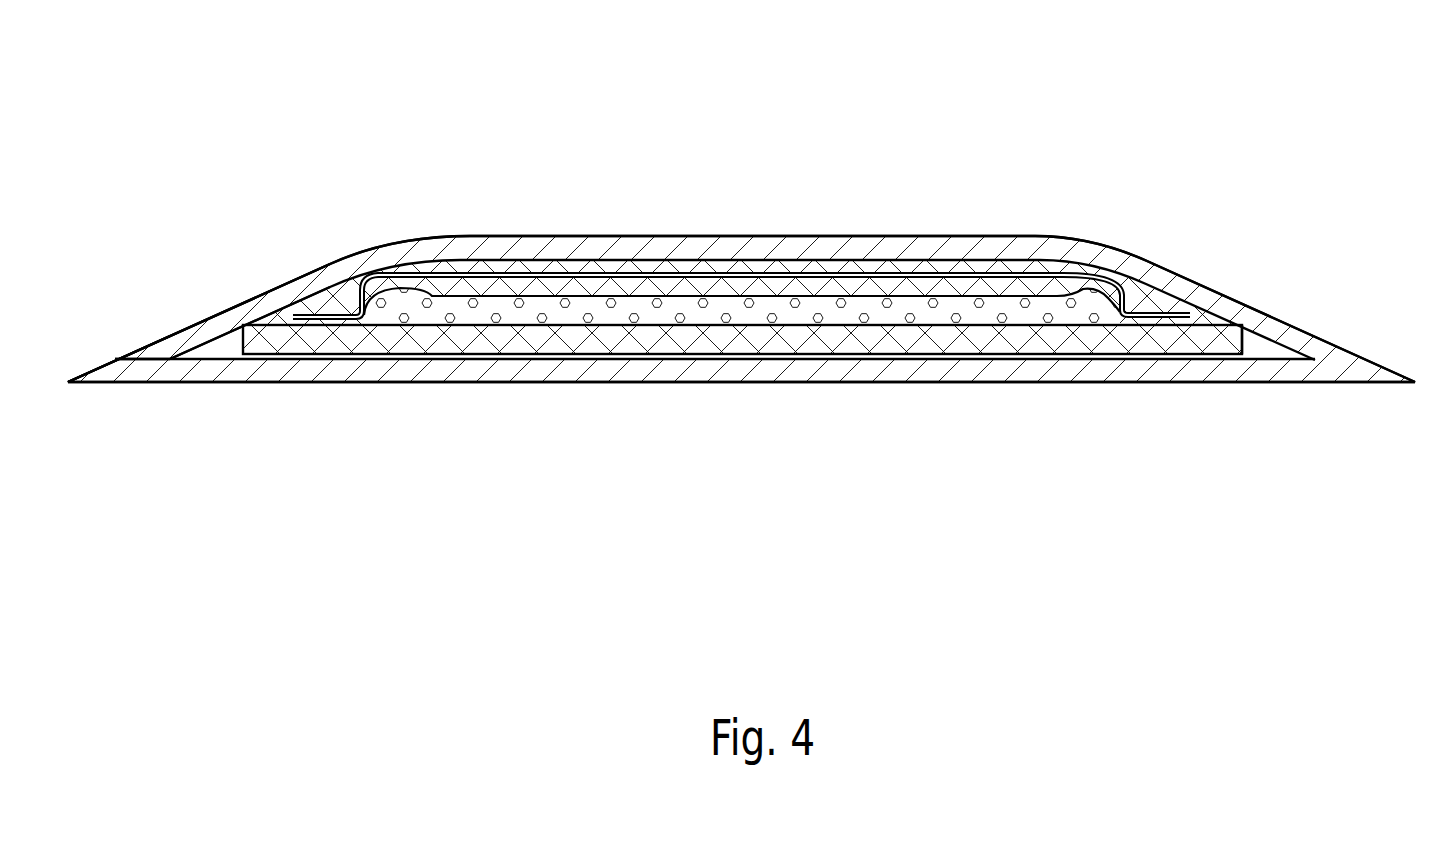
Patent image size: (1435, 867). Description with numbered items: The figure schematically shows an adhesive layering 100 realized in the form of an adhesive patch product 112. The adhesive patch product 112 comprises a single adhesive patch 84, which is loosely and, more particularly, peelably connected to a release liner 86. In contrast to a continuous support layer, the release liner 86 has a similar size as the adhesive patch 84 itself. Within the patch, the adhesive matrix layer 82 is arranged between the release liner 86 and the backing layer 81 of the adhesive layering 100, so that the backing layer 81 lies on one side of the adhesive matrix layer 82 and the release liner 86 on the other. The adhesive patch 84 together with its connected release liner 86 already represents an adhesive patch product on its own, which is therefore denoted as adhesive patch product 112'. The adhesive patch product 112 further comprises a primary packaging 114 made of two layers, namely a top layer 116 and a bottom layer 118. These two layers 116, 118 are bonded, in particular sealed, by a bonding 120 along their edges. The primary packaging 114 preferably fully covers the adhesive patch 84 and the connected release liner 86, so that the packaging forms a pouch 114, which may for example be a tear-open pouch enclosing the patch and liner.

The adhesive layering 100 is at (1113, 162).
The backing layer 81 is at (817, 283).
The adhesive matrix layer 82 is at (690, 315).
The adhesive patch 84 is at (1128, 307).
The release liner 86 is at (853, 345).
The adhesive patch product 112 is at (741, 279).
The adhesive patch product 112' is at (1334, 380).
The primary packaging 114 is at (173, 285).
The top layer 116 is at (258, 302).
The bottom layer 118 is at (213, 383).
The bonding 120 is at (118, 360).